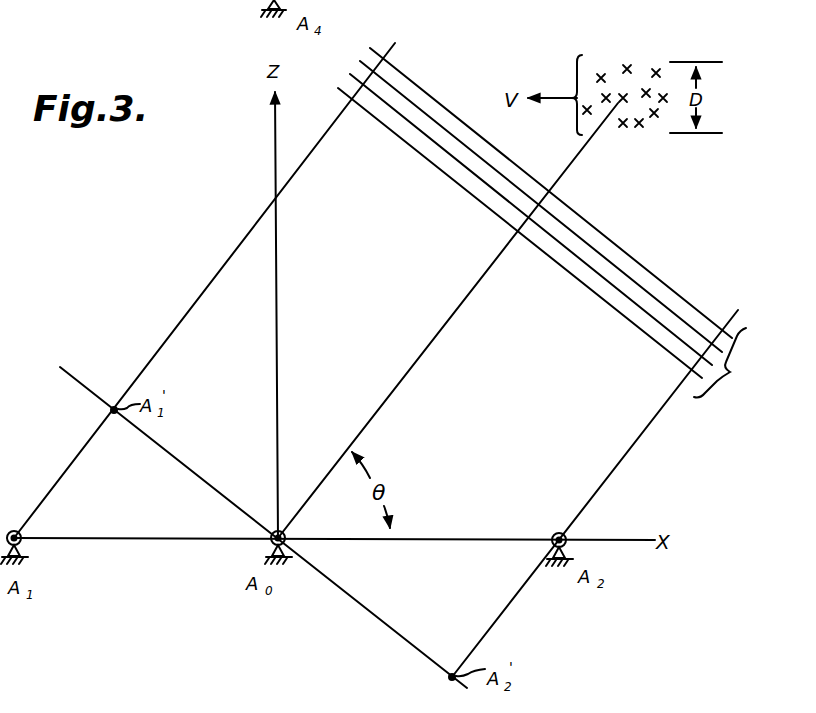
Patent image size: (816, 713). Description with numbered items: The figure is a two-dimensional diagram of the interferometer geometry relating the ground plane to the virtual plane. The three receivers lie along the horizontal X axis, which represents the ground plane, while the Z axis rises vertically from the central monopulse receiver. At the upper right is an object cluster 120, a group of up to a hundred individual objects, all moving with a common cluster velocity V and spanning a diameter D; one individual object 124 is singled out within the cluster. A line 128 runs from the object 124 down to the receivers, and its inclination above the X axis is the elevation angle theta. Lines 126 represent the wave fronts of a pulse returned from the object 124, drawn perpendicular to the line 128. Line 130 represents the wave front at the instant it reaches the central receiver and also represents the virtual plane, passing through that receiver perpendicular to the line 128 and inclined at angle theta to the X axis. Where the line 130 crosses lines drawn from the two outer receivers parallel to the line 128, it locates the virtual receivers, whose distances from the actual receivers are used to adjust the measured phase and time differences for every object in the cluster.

The object cluster 120 is at (614, 48).
The object 124 is at (634, 102).
The wave fronts 126 is at (731, 374).
The line from the object to the receivers 128 is at (478, 289).
The virtual plane (wave front at receiver A0) 130 is at (72, 374).